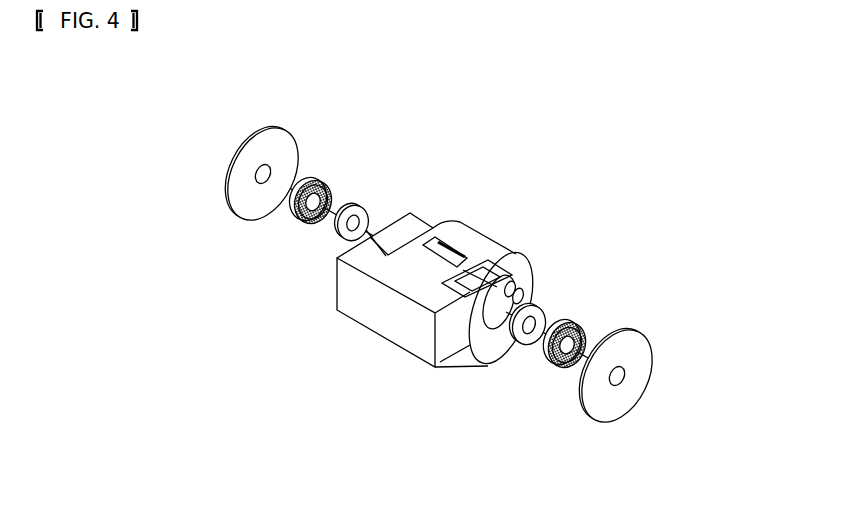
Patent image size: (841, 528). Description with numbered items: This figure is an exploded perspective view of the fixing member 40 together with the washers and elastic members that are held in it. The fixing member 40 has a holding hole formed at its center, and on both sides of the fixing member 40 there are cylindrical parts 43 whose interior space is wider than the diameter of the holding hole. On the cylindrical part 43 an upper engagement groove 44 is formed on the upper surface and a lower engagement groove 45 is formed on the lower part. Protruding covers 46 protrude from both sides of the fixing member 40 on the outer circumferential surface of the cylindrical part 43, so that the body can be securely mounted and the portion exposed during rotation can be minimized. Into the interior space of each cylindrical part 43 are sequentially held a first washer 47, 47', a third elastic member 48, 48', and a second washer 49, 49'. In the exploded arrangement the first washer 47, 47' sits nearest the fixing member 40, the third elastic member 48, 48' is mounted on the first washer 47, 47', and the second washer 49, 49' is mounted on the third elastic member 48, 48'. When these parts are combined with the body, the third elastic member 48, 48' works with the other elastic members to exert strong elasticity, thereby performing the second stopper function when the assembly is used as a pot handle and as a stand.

The fixing member 40 is at (387, 380).
The cylindrical part 43 is at (480, 238).
The upper engagement groove 44 is at (445, 243).
The lower engagement groove 45 is at (523, 278).
The protruding cover 46 is at (463, 350).
The first washer 47 is at (565, 288).
The first washer 47' is at (388, 172).
The third elastic member 48 is at (602, 321).
The third elastic member 48' is at (337, 152).
The second washer 49 is at (650, 375).
The second washer 49' is at (266, 147).